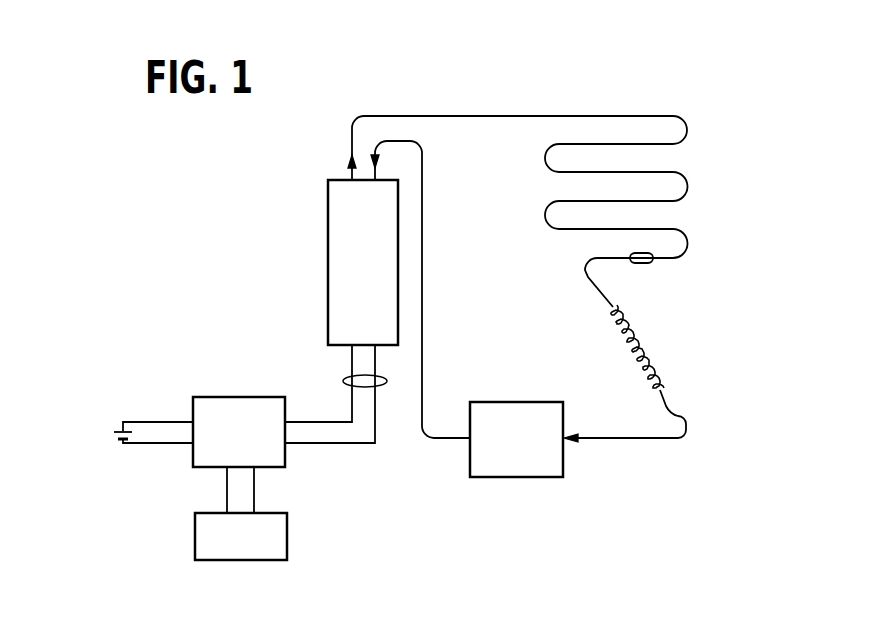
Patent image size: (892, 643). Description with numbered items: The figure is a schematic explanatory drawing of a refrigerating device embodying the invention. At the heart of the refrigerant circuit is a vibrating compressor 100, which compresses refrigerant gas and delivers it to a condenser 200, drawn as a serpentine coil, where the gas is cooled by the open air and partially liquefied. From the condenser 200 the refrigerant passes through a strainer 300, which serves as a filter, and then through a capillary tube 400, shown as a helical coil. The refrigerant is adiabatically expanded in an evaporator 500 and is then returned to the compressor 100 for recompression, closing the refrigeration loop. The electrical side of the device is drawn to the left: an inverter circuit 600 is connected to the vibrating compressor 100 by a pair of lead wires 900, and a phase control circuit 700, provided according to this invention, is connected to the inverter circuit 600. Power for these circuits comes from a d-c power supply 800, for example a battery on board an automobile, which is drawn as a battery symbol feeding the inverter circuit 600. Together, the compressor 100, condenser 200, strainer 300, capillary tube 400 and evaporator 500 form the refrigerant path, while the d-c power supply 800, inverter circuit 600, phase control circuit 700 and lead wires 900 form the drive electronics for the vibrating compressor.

The vibrating compressor 100 is at (328, 214).
The condenser 200 is at (757, 142).
The strainer 300 is at (653, 262).
The capillary tube 400 is at (640, 352).
The evaporator 500 is at (513, 401).
The inverter circuit 600 is at (236, 396).
The phase control circuit 700 is at (288, 536).
The d-c power supply 800 is at (114, 435).
The lead wires 900 is at (343, 381).